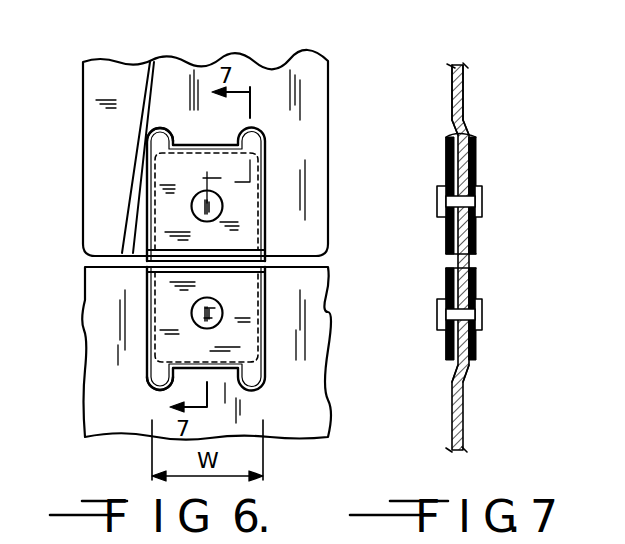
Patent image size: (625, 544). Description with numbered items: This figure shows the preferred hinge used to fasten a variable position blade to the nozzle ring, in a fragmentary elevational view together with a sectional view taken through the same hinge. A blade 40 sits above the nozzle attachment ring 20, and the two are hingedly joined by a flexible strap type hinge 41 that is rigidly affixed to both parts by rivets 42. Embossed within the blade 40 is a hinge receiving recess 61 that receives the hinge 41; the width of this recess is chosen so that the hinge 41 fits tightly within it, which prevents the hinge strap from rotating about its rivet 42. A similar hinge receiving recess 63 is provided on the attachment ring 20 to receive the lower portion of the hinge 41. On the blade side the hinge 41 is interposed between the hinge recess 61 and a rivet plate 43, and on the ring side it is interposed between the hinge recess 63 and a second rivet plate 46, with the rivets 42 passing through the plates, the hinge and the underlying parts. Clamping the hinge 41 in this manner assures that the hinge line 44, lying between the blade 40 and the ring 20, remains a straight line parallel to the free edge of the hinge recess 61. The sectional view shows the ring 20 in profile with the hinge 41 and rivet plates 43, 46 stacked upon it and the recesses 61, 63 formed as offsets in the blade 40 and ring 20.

In FIG. 6, the nozzle attachment ring 20 is at (285, 418).
In FIG. 7, the nozzle attachment ring 20 is at (463, 420).
In FIG. 6, the blade 40 is at (302, 82).
In FIG. 7, the blade 40 is at (465, 92).
In FIG. 6, the flexible strap type hinge 41 is at (167, 295).
In FIG. 6, the rivet 42 is at (223, 207).
In FIG. 7, the rivet 42 is at (482, 203).
In FIG. 6, the rivet plate 43 is at (245, 233).
In FIG. 7, the rivet plate 43 is at (443, 235).
In FIG. 6, the hinge line 44 is at (120, 258).
In FIG. 7, the hinge line 44 is at (466, 258).
In FIG. 6, the rivet plate 46 is at (250, 343).
In FIG. 7, the rivet plate 46 is at (450, 355).
In FIG. 6, the hinge receiving recess 61 is at (270, 147).
In FIG. 7, the hinge receiving recess 61 is at (472, 132).
In FIG. 6, the hinge receiving recess 63 is at (150, 373).
In FIG. 7, the hinge receiving recess 63 is at (470, 345).